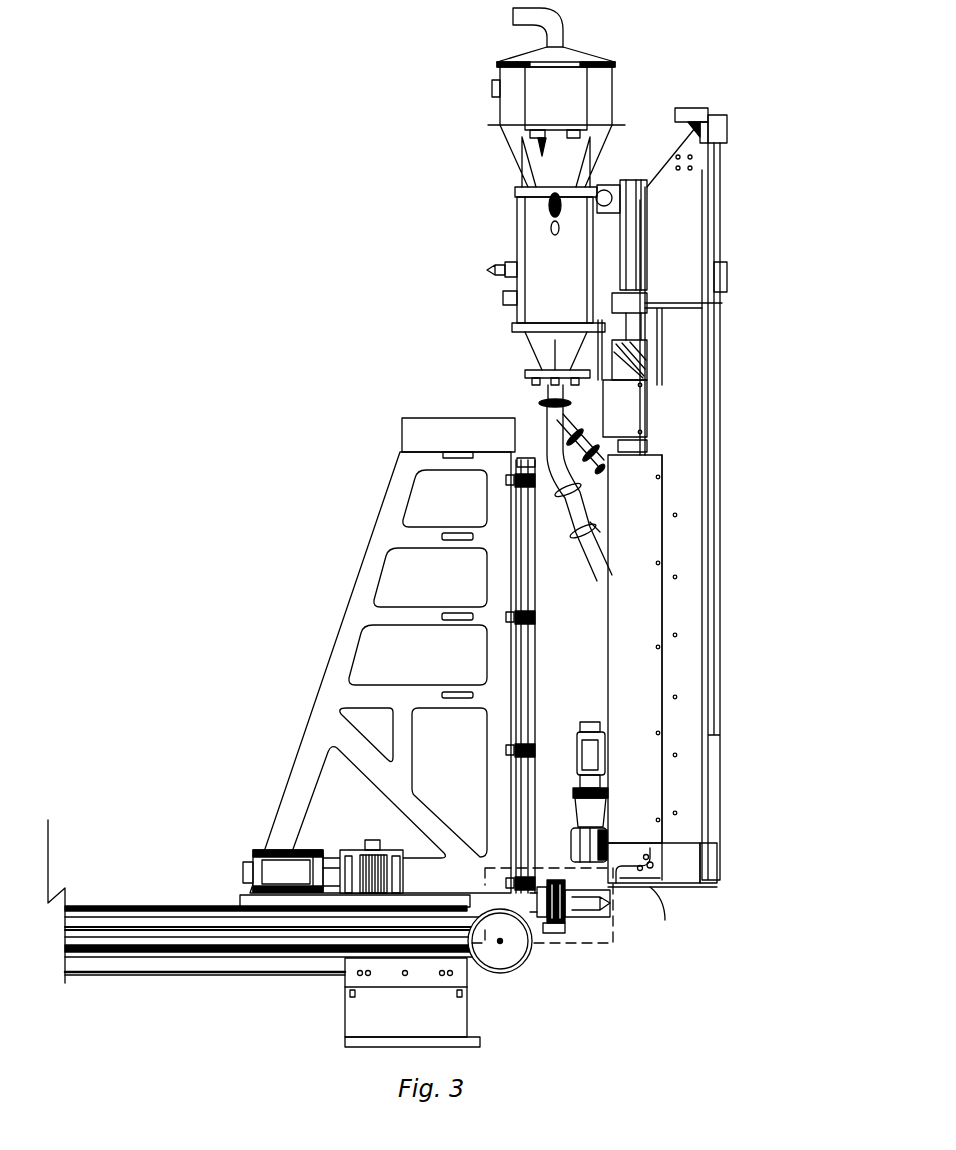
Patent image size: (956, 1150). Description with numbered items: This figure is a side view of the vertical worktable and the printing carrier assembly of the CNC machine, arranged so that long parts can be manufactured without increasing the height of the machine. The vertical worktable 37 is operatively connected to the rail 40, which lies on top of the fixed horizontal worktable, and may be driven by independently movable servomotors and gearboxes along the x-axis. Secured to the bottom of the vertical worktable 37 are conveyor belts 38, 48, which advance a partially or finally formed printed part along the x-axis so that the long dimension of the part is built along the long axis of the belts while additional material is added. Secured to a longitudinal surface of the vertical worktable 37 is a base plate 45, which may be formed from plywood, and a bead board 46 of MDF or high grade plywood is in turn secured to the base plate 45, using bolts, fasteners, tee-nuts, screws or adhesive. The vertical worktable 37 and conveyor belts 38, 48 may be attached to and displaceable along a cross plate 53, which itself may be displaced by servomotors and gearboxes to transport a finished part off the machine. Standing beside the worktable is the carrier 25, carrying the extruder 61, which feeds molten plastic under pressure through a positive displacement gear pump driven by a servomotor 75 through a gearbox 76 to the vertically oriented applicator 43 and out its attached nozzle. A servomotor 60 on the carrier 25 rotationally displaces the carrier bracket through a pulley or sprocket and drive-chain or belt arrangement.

The carrier 25 is at (773, 465).
The vertical worktable 37 is at (457, 452).
The conveyor belt 38 is at (187, 906).
The conveyor belt 48 is at (272, 932).
The rail 40 is at (187, 912).
The vertically oriented applicator 43 is at (568, 931).
The base plate 45 is at (528, 458).
The bead board 46 is at (547, 397).
The cross plate 53 is at (418, 897).
The servomotor 60 is at (612, 902).
The extruder 61 is at (623, 413).
The servomotor 75 is at (592, 722).
The gearbox 76 is at (571, 845).